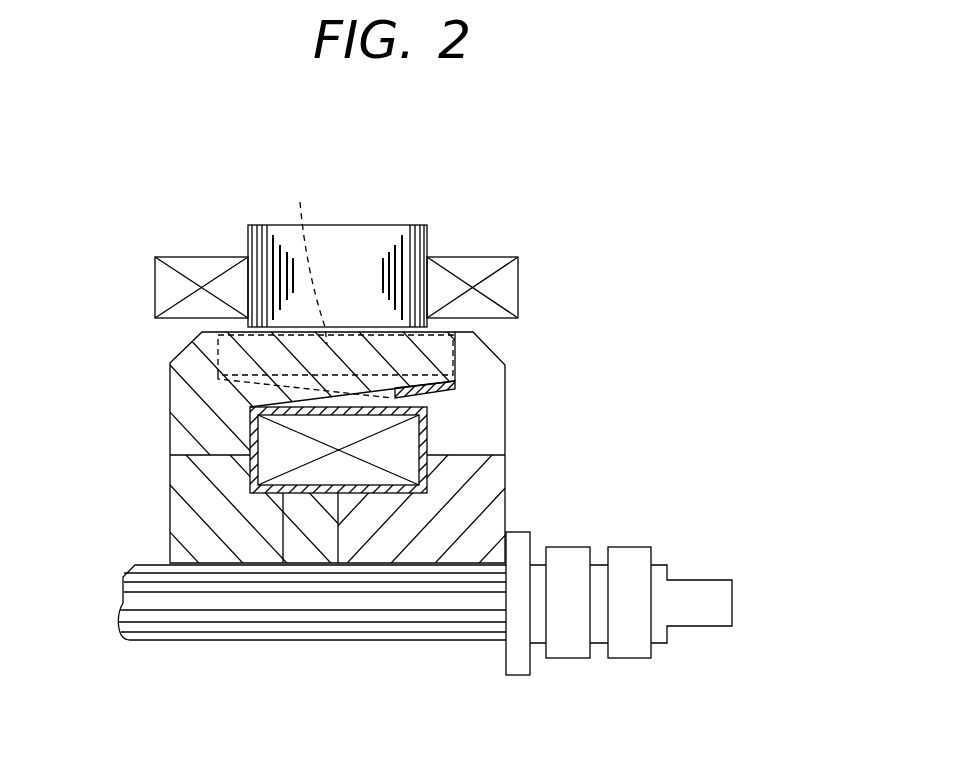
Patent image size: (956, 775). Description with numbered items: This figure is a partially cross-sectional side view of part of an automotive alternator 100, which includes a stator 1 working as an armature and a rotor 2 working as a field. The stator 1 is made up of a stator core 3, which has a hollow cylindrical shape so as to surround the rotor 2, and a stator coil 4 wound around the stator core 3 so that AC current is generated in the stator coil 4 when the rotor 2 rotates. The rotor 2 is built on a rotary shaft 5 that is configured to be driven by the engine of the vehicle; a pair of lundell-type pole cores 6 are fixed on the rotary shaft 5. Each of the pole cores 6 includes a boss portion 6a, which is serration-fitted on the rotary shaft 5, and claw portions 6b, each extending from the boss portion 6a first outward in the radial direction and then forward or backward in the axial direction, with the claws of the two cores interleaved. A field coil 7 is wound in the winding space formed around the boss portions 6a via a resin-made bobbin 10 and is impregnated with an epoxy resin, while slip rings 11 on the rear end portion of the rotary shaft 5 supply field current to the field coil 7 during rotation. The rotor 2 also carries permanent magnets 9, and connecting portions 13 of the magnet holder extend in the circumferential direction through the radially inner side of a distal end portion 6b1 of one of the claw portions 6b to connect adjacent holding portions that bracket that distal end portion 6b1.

The alternator 100 is at (612, 173).
The stator 1 is at (490, 168).
The stator core 3 is at (372, 257).
The stator coil 4 is at (467, 260).
The permanent magnets 9 is at (309, 259).
The rotor 2 is at (158, 362).
The lundell-type pole cores 6 is at (88, 403).
The claw portions 6b is at (193, 417).
The boss portion 6a is at (193, 490).
The distal end portion 6b1 is at (437, 355).
The connecting portions 13 is at (452, 403).
The field coil 7 is at (356, 470).
The bobbin 10 is at (284, 497).
The rotary shaft 5 is at (158, 622).
The slip rings 11 is at (633, 560).